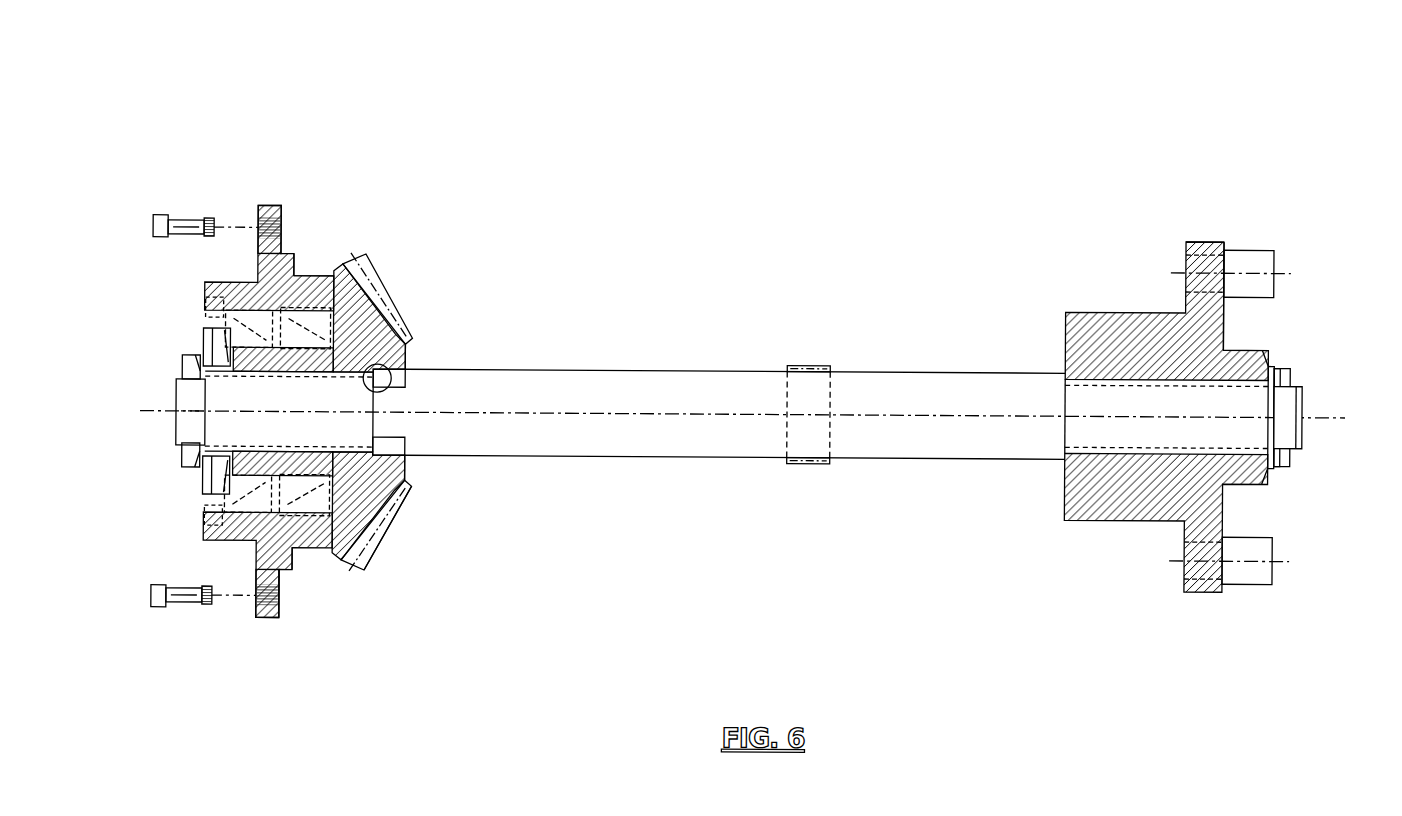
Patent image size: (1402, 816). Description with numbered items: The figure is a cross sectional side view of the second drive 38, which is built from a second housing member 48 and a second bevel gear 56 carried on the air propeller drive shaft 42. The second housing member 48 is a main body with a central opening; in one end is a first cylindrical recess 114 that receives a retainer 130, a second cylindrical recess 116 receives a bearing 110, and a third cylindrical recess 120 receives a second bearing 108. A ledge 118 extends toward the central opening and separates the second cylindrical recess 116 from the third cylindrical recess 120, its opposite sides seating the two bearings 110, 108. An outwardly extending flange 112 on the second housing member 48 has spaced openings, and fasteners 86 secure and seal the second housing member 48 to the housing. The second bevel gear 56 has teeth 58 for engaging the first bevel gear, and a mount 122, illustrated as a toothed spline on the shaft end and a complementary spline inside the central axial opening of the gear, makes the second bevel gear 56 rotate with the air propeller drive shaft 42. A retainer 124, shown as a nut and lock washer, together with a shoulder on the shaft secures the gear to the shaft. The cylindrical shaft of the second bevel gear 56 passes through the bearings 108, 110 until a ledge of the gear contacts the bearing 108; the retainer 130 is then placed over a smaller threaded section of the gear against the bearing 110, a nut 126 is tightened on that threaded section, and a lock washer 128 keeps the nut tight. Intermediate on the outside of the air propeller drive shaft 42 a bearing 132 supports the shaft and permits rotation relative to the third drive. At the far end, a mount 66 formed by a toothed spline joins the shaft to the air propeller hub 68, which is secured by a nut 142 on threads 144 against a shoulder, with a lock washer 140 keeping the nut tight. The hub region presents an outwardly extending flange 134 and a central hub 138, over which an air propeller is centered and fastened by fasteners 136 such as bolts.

The second drive 38 is at (632, 140).
The air propeller drive shaft 42 is at (897, 366).
The second housing member 48 is at (296, 572).
The second bevel gear 56 is at (406, 459).
The teeth 58 is at (386, 524).
The mount 66 is at (1100, 455).
The air propeller hub 68 is at (1120, 518).
The fasteners 86 is at (149, 222).
The second bearing 108 is at (295, 553).
The bearing 110 is at (218, 512).
The outwardly extending flange 112 is at (279, 616).
The first cylindrical recess 114 is at (202, 288).
The second cylindrical recess 116 is at (255, 280).
The ledge 118 is at (310, 298).
The third cylindrical recess 120 is at (333, 289).
The mount 122 is at (398, 372).
The retainer 124 is at (180, 380).
The nut 126 is at (192, 357).
The lock washer 128 is at (200, 332).
The retainer 130 is at (205, 320).
The bearing 132 is at (812, 458).
The outwardly extending flange 134 is at (1211, 236).
The fasteners 136 is at (1257, 244).
The central hub 138 is at (1257, 338).
The lock washer 140 is at (1272, 358).
The nut 142 is at (1292, 358).
The threads 144 is at (1306, 380).